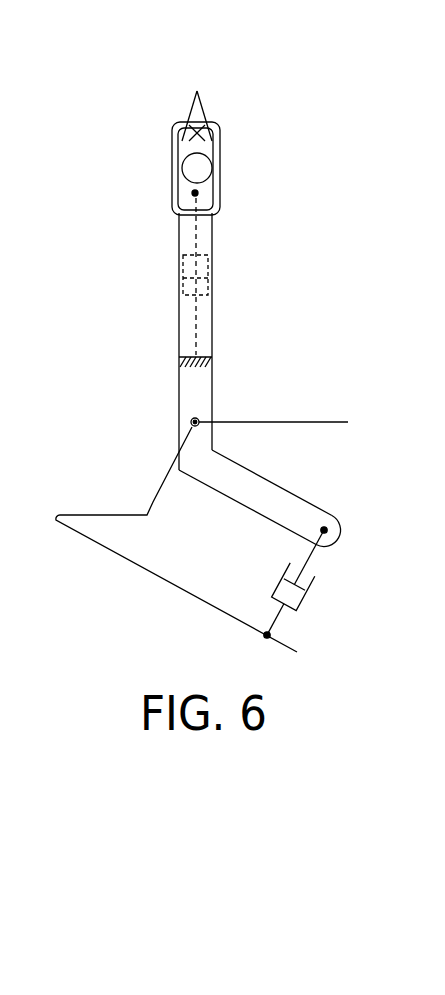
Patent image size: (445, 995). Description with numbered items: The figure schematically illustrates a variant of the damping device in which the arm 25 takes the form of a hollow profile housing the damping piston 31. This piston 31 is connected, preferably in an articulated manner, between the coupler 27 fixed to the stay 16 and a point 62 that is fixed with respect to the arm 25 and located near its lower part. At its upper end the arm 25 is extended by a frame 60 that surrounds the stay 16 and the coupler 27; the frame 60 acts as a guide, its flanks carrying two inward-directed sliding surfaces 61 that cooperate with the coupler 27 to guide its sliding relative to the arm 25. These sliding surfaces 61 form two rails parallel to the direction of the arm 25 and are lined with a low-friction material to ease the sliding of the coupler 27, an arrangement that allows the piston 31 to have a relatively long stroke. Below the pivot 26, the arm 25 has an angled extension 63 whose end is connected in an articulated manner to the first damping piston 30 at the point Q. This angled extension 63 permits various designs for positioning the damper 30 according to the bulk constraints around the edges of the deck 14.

The deck 14 is at (153, 497).
The stay 16 is at (195, 168).
The arm 25 is at (179, 318).
The pivot 26 is at (190, 420).
The coupler 27 is at (196, 195).
The first damping piston 30 is at (308, 595).
The damping piston 31 is at (180, 265).
The frame 60 is at (218, 122).
The sliding surfaces 61 is at (197, 91).
The point 62 is at (197, 355).
The angled extension 63 is at (237, 503).
The point Q is at (336, 527).